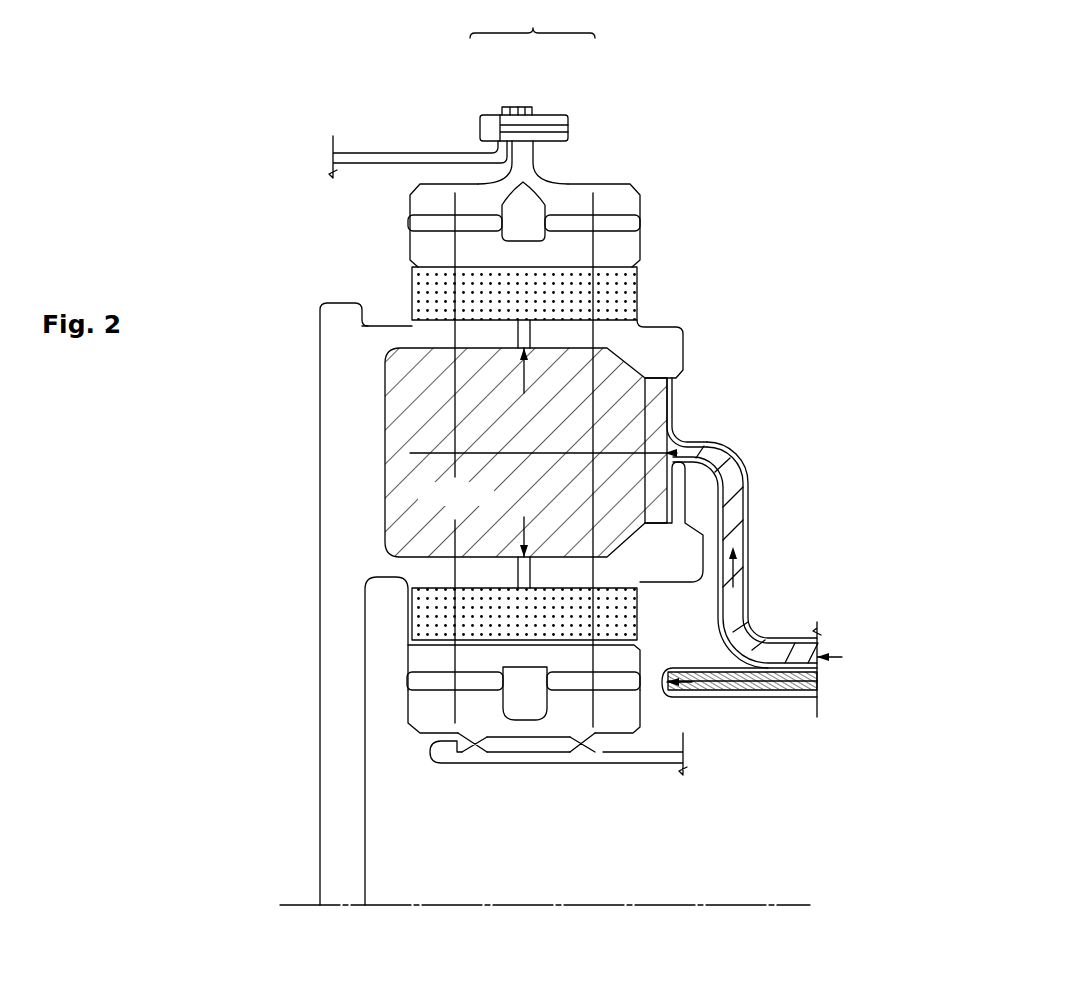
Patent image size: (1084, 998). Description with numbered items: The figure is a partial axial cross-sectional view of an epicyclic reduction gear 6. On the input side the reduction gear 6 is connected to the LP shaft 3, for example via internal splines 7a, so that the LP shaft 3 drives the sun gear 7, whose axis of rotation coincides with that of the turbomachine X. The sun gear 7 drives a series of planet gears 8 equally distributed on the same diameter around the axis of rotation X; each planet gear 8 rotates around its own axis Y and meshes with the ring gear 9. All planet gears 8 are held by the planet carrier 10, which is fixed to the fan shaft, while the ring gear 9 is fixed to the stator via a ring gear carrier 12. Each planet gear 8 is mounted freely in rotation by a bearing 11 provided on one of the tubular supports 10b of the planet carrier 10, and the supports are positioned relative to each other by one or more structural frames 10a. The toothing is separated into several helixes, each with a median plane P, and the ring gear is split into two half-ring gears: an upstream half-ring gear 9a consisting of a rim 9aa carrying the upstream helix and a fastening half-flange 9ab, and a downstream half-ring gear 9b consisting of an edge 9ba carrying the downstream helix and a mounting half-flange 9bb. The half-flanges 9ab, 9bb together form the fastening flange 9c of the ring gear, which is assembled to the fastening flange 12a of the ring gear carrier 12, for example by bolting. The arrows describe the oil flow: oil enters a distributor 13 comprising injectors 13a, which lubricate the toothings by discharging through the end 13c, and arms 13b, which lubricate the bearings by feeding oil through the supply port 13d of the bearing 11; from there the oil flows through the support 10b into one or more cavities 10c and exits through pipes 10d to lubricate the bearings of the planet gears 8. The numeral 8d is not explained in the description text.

The LP shaft 3 is at (643, 757).
The epicyclic reduction gear 6 is at (763, 275).
The sun gear 7 is at (413, 707).
The internal splines 7a is at (503, 745).
The planet gear 8 is at (417, 657).
The flange portion of second mounting member 8d is at (412, 678).
The ring gear 9 is at (640, 188).
The upstream half-ring gear 9a is at (410, 205).
The rim 9aa is at (433, 197).
The fastening half-flange 9ab is at (515, 106).
The downstream half-ring gear 9b is at (632, 207).
The edge 9ba is at (580, 193).
The mounting half-flange 9bb is at (530, 106).
The fastening flange of the ring gear 9c is at (532, 57).
The planet carrier 10 is at (680, 330).
The structural frame 10a is at (343, 403).
The tubular support 10b is at (670, 558).
The cavity 10c is at (526, 452).
The pipe 10d is at (530, 330).
The bearing 11 is at (628, 282).
The ring gear carrier 12 is at (372, 152).
The fastening flange of the ring gear carrier 12a is at (500, 113).
The distributor 13 is at (817, 607).
The injector 13a is at (763, 692).
The arm 13b is at (747, 510).
The end 13c is at (663, 700).
The supply port 13d is at (675, 397).
The median plane P is at (432, 720).
The axis of rotation of the turbomachine X is at (770, 905).
The axis of the planet gear Y is at (677, 433).